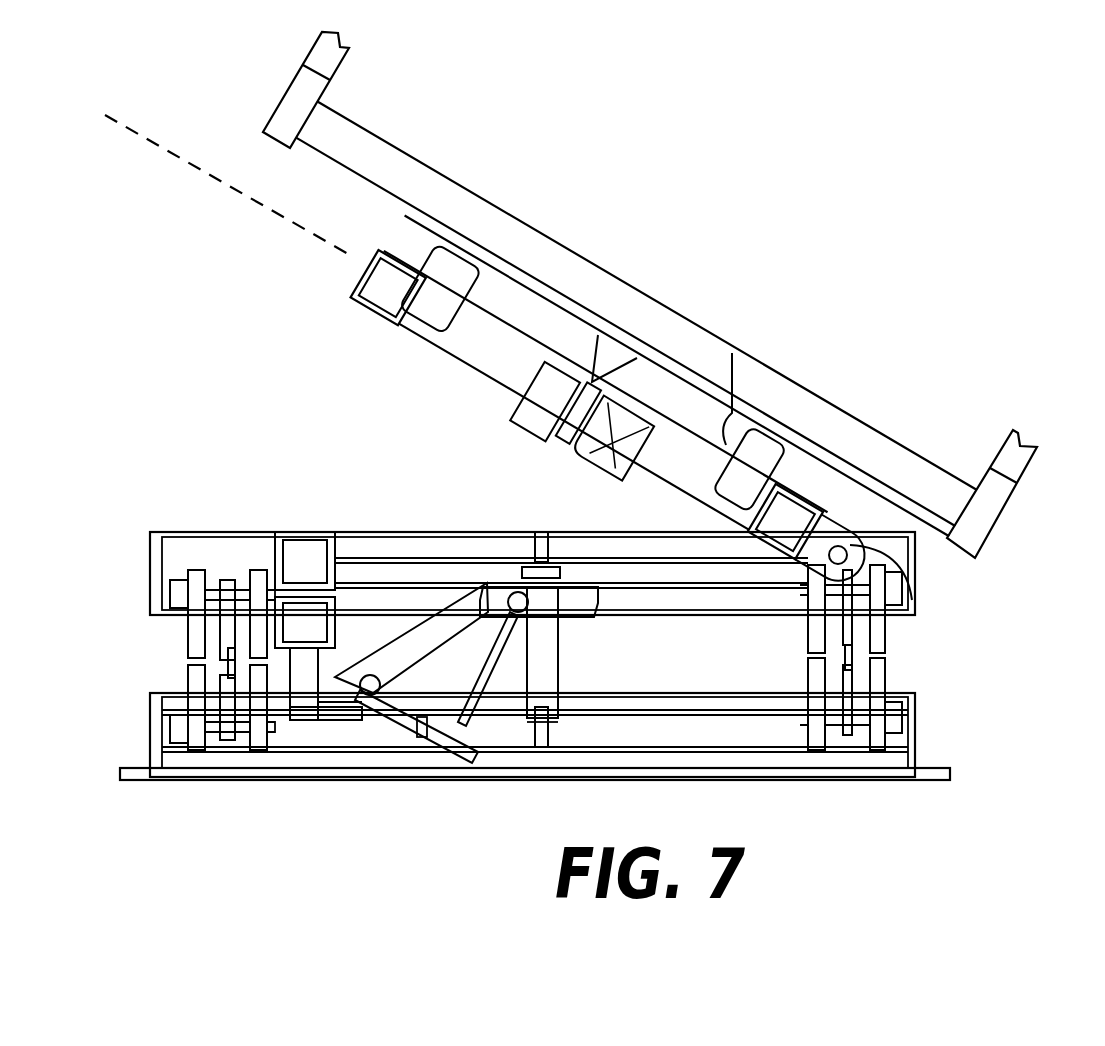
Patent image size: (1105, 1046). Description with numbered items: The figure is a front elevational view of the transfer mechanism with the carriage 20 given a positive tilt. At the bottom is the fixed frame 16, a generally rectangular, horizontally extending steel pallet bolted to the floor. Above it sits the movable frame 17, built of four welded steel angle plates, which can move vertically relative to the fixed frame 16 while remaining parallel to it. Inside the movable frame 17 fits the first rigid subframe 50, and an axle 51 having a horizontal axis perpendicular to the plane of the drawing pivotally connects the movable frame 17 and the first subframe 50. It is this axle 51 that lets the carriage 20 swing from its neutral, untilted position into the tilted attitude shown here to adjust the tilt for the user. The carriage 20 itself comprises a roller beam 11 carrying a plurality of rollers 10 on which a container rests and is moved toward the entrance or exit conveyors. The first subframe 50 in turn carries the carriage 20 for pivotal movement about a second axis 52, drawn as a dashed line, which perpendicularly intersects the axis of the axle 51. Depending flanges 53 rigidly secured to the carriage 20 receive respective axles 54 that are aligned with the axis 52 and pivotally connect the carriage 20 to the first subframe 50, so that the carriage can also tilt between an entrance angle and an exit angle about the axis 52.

The rollers 10 is at (545, 250).
The roller beam 11 is at (340, 72).
The fixed frame 16 is at (915, 742).
The movable frame 17 is at (898, 593).
The carriage 20 is at (285, 97).
The first rigid subframe 50 is at (477, 358).
The axle 51 is at (908, 568).
The axis 52 is at (222, 185).
The depending flanges 53 is at (430, 245).
The axles 54 is at (357, 300).